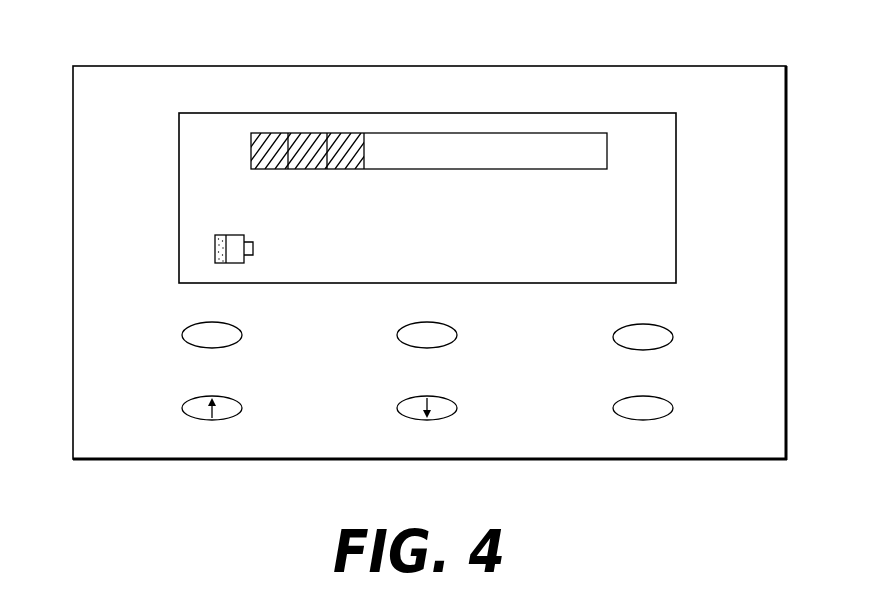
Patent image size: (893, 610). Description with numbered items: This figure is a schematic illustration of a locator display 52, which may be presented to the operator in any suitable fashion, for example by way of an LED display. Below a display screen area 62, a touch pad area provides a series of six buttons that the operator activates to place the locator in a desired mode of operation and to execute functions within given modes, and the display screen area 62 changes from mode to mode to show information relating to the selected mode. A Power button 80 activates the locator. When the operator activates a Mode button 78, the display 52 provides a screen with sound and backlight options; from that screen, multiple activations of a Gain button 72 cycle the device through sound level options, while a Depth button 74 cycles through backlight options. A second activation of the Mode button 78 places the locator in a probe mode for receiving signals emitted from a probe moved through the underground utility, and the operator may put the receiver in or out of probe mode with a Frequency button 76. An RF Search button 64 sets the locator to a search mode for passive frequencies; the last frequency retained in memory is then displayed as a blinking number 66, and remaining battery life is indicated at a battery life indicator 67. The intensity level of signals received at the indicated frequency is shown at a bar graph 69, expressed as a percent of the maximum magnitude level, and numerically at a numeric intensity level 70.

The display 52 is at (72, 248).
The display screen area 62 is at (676, 137).
The RF Search button 64 is at (457, 336).
The blinking frequency number 66 is at (643, 268).
The battery life indicator 67 is at (237, 235).
The bar graph 69 is at (483, 133).
The numeric intensity level 70 is at (656, 222).
The Gain button 72 is at (182, 409).
The Depth button 74 is at (457, 409).
The Frequency button 76 is at (673, 409).
The Mode button 78 is at (673, 338).
The Power button 80 is at (182, 336).